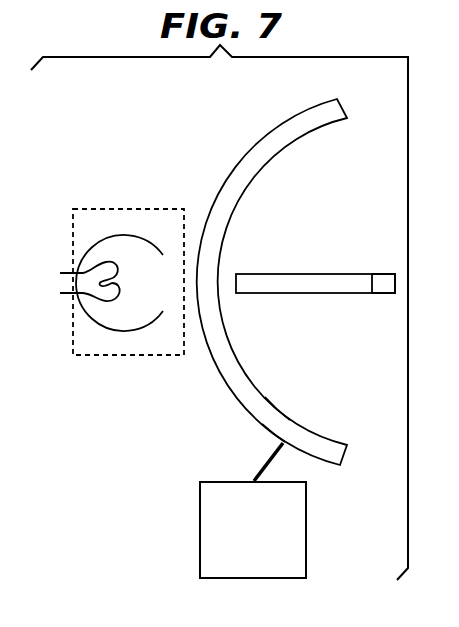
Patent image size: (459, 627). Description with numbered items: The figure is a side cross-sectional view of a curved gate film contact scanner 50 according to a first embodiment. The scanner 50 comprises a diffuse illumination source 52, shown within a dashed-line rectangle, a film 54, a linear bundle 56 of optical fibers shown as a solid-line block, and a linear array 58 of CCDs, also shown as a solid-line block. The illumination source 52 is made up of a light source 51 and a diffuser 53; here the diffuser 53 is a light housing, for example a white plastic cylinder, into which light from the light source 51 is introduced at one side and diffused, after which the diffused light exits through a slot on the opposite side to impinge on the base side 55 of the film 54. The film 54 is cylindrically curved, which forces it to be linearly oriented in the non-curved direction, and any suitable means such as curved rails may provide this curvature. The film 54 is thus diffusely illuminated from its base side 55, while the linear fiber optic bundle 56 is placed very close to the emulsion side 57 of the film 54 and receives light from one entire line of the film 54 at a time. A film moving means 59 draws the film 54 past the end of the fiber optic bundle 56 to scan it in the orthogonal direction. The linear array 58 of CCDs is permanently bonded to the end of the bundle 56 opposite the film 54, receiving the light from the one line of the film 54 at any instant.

The film contact scanner 50 is at (135, 98).
The light source 51 is at (107, 301).
The diffuse illumination source 52 is at (131, 208).
The diffuser 53 is at (130, 332).
The film 54 is at (267, 142).
The base side 55 is at (272, 438).
The linear bundle of optical fibers 56 is at (297, 273).
The emulsion side 57 is at (277, 407).
The linear array of CCDs 58 is at (384, 294).
The film moving means 59 is at (200, 500).